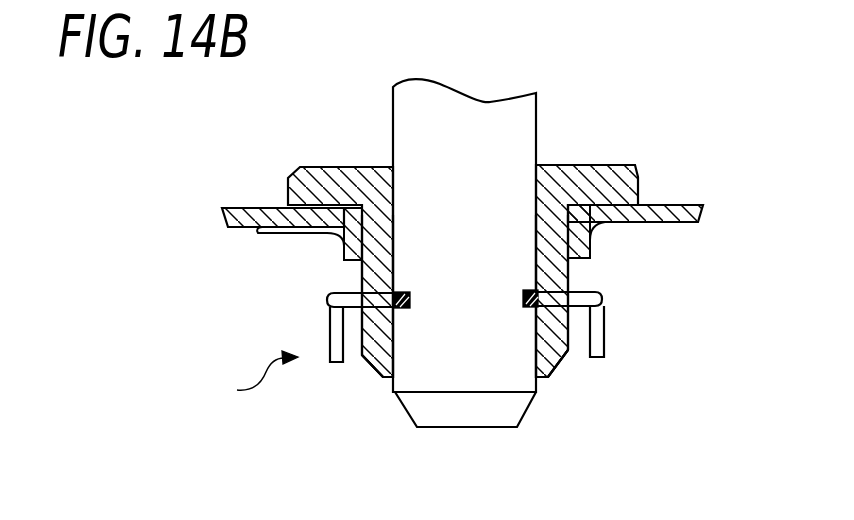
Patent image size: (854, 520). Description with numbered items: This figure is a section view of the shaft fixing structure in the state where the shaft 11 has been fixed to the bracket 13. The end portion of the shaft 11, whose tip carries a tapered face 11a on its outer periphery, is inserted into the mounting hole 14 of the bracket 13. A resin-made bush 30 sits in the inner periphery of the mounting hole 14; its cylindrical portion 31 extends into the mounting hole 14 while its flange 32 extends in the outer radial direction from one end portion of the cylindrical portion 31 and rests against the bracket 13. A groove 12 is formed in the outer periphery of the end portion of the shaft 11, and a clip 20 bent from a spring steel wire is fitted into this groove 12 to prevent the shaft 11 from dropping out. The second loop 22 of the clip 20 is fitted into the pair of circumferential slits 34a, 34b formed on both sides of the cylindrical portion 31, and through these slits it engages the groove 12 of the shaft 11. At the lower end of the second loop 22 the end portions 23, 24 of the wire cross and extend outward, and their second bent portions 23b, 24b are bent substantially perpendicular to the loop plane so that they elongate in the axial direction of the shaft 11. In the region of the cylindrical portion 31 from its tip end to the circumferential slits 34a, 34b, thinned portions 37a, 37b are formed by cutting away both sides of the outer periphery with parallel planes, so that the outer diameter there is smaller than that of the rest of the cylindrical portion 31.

The shaft 11 is at (536, 105).
The tapered face 11a is at (530, 410).
The groove 12 is at (528, 307).
The bracket 13 is at (258, 233).
The mounting hole 14 is at (343, 248).
The clip 20 is at (250, 380).
The second loop 22 is at (527, 289).
The end portion 23 is at (327, 300).
The second bent portion 23b is at (335, 362).
The end portion 24 is at (592, 295).
The second bent portion 24b is at (604, 350).
The bush 30 is at (617, 161).
The cylindrical portion 31 is at (570, 267).
The flange 32 is at (640, 184).
The circumferential slit 34a is at (565, 282).
The circumferential slit 34b is at (363, 270).
The thinned portion 37a is at (567, 352).
The thinned portion 37b is at (363, 356).